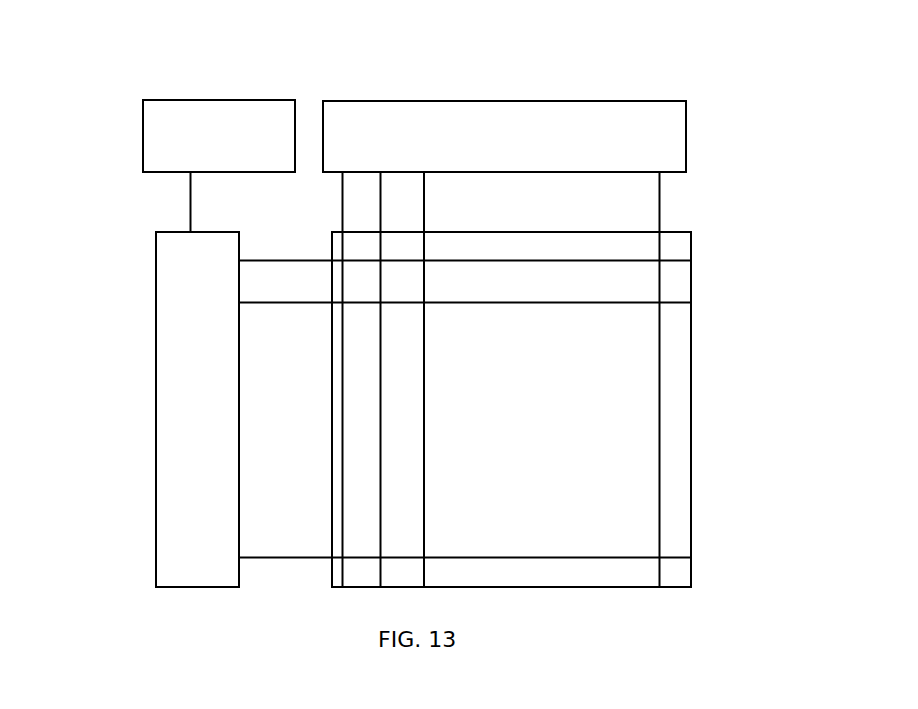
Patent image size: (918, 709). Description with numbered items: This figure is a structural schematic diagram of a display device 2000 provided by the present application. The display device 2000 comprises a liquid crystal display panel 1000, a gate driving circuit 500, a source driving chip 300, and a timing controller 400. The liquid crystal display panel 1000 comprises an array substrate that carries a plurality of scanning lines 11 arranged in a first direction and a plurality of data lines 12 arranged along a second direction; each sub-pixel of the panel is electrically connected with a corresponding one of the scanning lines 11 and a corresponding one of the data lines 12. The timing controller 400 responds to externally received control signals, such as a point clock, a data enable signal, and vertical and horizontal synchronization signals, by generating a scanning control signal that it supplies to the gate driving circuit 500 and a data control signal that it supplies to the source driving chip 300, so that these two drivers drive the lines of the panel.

The display device 2000 is at (156, 46).
The liquid crystal display panel 1000 is at (691, 362).
The scanning lines 11 is at (665, 258).
The data lines 12 is at (660, 322).
The source driving chip 300 is at (686, 138).
The timing controller 400 is at (142, 132).
The gate driving circuit 500 is at (155, 433).